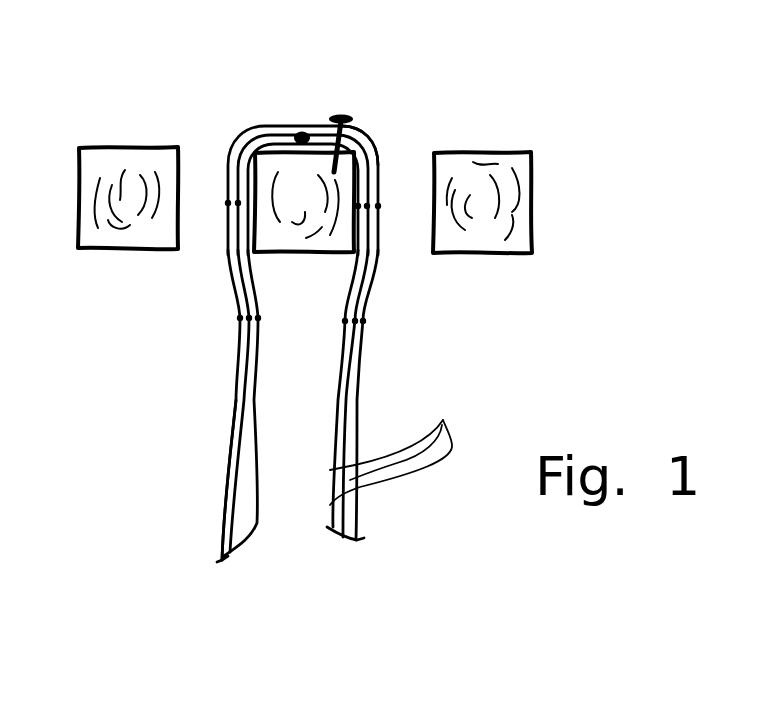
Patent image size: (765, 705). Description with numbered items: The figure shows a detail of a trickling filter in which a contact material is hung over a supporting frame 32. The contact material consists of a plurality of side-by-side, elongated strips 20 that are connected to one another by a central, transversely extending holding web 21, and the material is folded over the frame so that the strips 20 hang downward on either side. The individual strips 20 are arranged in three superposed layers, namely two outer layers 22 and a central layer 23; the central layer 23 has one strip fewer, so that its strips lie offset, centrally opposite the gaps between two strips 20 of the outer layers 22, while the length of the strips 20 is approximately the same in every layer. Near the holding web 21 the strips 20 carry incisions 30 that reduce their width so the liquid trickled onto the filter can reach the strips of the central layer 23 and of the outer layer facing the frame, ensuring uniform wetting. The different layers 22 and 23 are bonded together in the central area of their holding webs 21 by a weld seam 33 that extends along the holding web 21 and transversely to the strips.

The elongated strips 20 is at (396, 446).
The holding web 21 is at (373, 190).
The outer layers 22 is at (256, 460).
The central layer 23 is at (236, 405).
The incisions 30 is at (230, 344).
The supporting frame 32 is at (355, 100).
The weld seam 33 is at (303, 133).